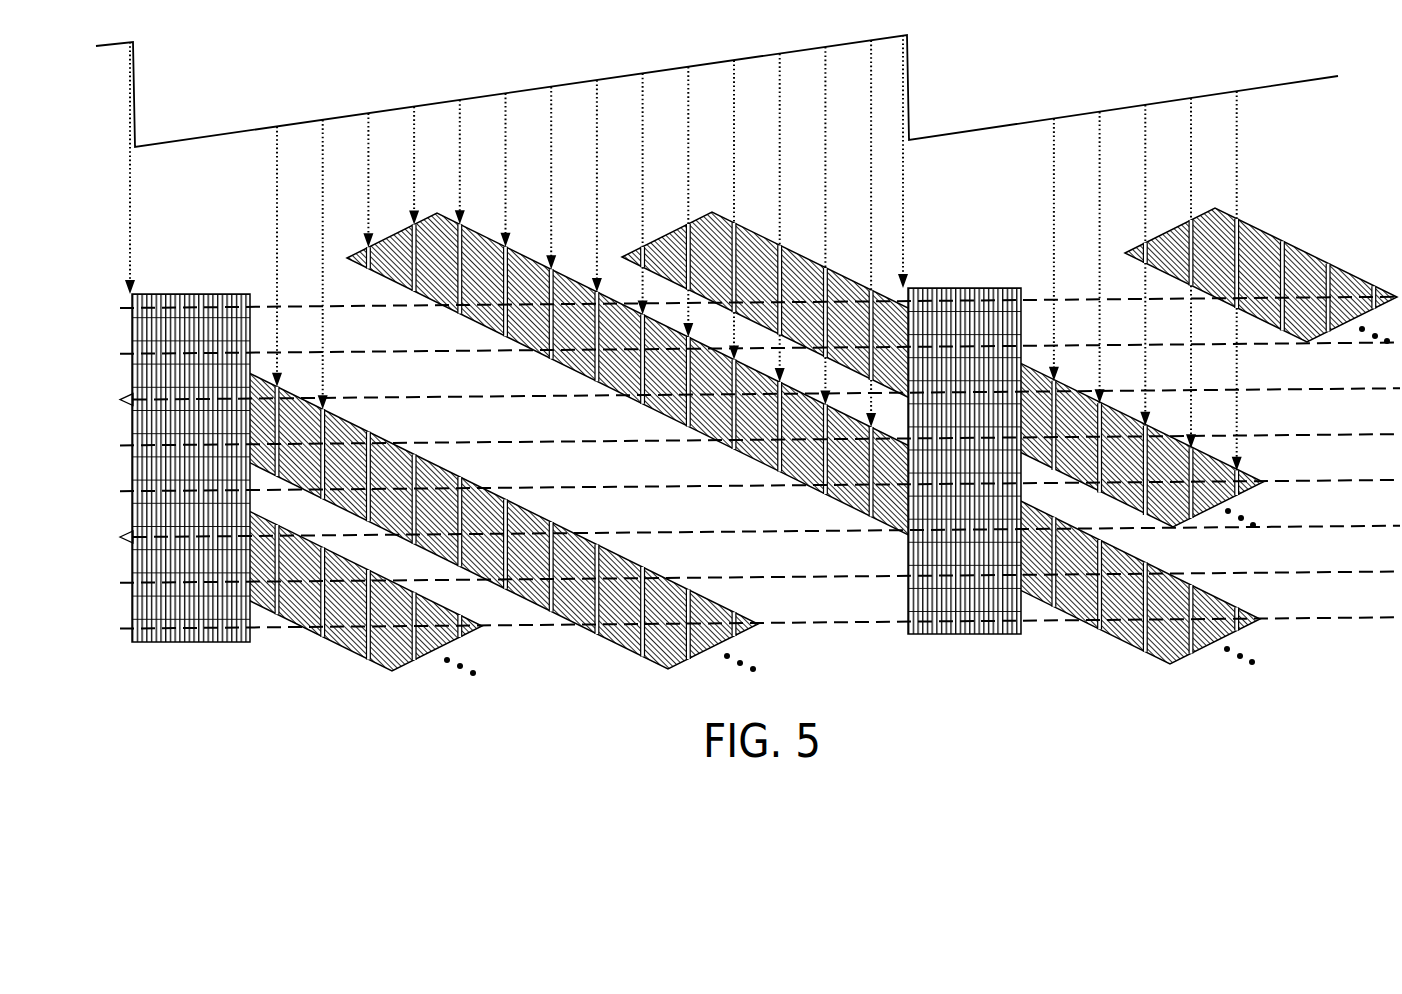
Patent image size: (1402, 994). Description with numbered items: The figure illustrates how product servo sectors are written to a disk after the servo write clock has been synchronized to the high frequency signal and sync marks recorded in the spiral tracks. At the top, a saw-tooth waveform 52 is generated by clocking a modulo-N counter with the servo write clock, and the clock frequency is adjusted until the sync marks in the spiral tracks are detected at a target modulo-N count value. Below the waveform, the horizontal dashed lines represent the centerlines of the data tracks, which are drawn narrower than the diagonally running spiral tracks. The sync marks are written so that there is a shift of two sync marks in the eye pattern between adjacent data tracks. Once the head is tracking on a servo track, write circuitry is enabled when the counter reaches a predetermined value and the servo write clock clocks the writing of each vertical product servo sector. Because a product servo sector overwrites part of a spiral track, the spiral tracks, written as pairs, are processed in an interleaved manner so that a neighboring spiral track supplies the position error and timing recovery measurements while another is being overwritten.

The saw-tooth waveform 52 is at (568, 80).